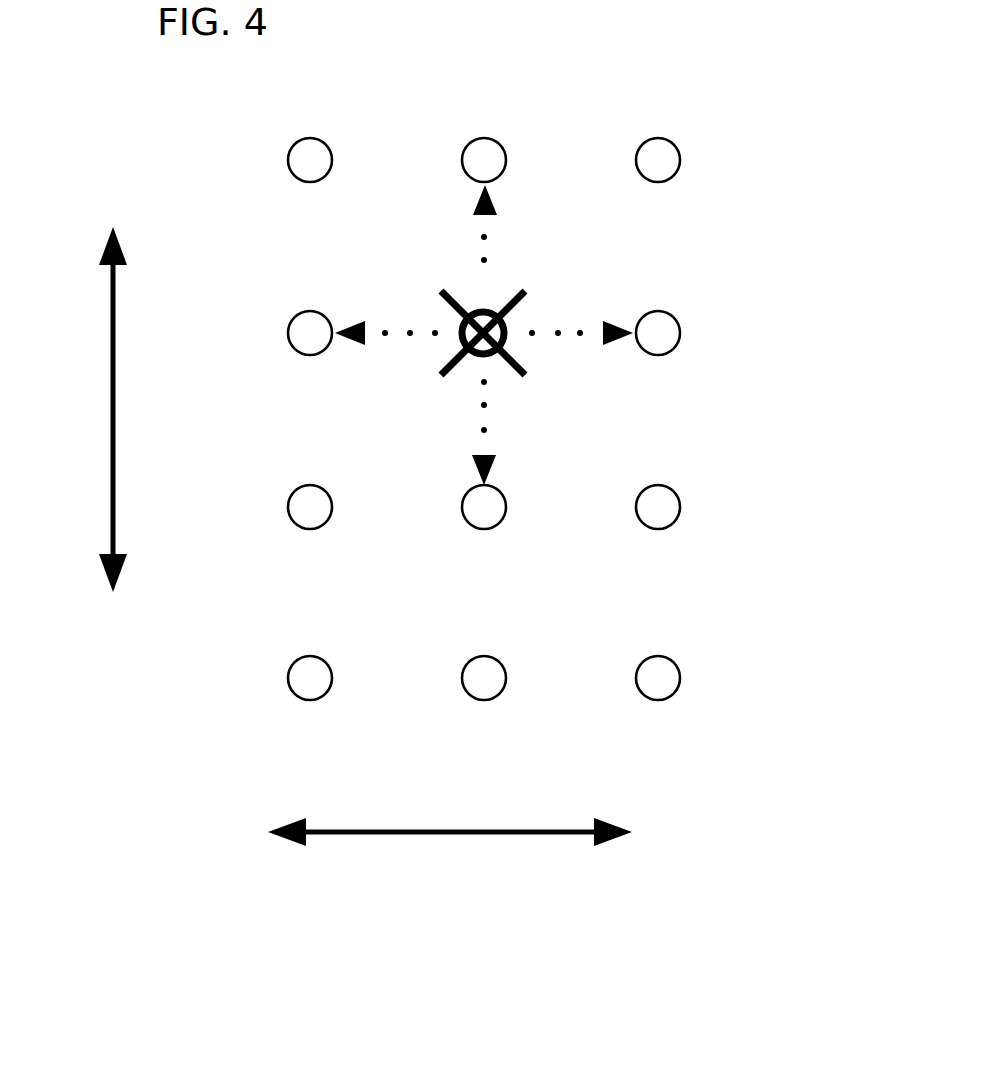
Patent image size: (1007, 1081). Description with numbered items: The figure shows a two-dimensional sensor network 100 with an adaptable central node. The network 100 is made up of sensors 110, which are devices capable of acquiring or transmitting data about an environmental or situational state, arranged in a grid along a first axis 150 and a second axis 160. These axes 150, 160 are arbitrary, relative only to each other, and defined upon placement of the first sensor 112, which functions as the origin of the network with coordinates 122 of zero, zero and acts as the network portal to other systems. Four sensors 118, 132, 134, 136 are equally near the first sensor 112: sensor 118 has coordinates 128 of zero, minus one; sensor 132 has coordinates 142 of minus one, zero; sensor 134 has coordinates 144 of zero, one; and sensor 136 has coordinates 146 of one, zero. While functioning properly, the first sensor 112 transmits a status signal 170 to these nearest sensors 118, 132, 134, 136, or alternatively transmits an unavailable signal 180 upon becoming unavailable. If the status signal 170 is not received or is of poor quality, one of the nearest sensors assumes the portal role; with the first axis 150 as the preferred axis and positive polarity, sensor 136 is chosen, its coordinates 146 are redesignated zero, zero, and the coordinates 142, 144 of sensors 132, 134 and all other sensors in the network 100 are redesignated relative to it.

The network 100 is at (545, 42).
The sensors 110 is at (678, 150).
The first sensor 112 is at (505, 341).
The sensor 118 is at (507, 515).
The coordinates 122 is at (523, 271).
The coordinates 128 is at (522, 575).
The sensor 132 is at (287, 331).
The sensor 134 is at (462, 157).
The sensor 136 is at (680, 333).
The coordinates 142 is at (268, 290).
The coordinates 144 is at (453, 110).
The coordinates 146 is at (696, 290).
The first axis 150 is at (395, 832).
The second axis 160 is at (108, 375).
The status signal 170 is at (397, 332).
The unavailable signal 180 is at (397, 332).